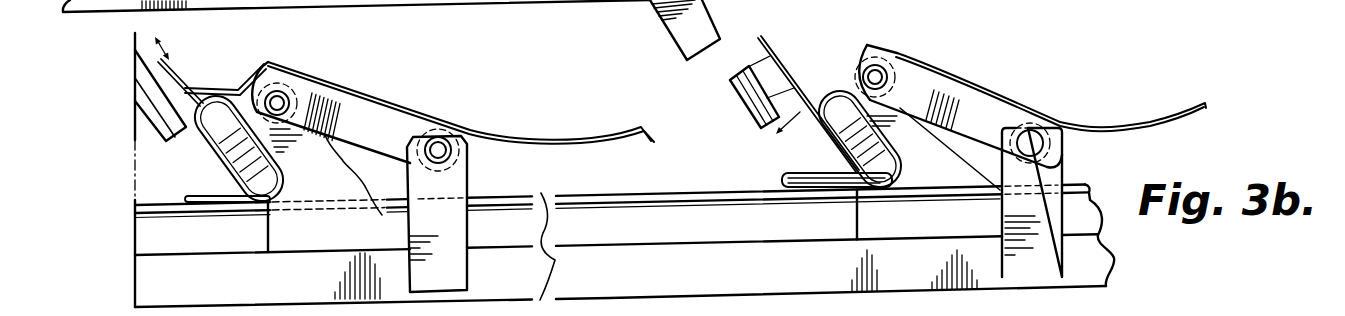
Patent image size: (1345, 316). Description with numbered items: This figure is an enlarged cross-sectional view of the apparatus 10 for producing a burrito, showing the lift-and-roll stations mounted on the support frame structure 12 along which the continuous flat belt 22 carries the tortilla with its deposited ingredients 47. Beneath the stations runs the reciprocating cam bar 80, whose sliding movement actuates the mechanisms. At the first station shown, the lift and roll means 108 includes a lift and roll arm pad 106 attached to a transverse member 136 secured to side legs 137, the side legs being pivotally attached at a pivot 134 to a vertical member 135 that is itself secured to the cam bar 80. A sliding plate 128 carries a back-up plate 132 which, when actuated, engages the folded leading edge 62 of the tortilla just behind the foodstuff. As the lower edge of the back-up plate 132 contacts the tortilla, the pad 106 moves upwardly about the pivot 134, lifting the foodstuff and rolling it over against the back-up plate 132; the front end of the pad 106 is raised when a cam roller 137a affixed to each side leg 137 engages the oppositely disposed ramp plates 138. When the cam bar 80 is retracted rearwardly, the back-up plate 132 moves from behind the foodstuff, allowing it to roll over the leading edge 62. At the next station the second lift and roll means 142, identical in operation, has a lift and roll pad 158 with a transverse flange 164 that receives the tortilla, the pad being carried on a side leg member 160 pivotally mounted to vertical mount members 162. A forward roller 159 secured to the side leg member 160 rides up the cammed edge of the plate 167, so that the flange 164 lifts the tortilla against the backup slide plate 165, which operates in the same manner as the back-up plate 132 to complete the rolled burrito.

The apparatus 10 is at (648, 103).
The support frame structure 12 is at (1119, 0).
The continuous flat belt 22 is at (717, 197).
The ingredients 47 is at (213, 137).
The leading edge 62 is at (213, 197).
The reciprocating cam bar 80 is at (572, 10).
The lift and roll arm pad 106 is at (266, 64).
The lift and roll means 108 is at (453, 118).
The sliding plate 128 is at (155, 113).
The back-up plate 132 is at (175, 80).
The pivot 134 is at (441, 147).
The vertical member 135 is at (463, 181).
The transverse member 136 is at (300, 72).
The side legs 137 is at (347, 107).
The cam roller 137a is at (225, 79).
The ramp plates 138 is at (330, 244).
The second lift and roll means 142 is at (1025, 101).
The lift and roll pad 158 is at (898, 53).
The forward roller 159 is at (871, 43).
The side leg member 160 is at (947, 93).
The vertical mount members 162 is at (1062, 167).
The transverse flange 164 is at (858, 83).
The backup slide plate 165 is at (768, 43).
The plate 167 is at (921, 159).